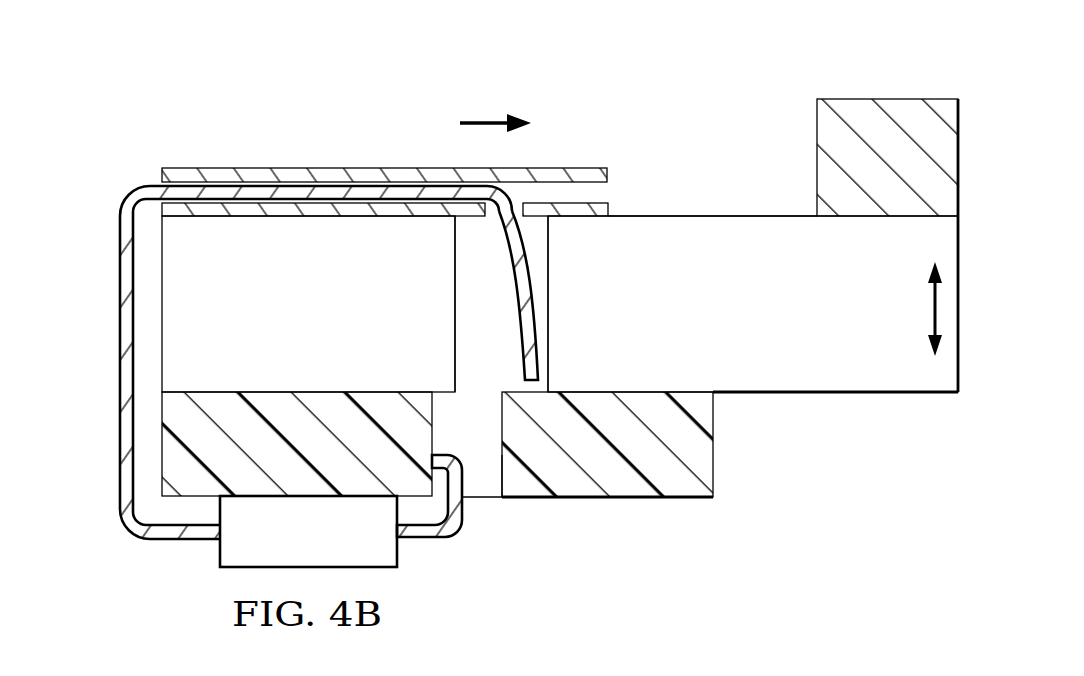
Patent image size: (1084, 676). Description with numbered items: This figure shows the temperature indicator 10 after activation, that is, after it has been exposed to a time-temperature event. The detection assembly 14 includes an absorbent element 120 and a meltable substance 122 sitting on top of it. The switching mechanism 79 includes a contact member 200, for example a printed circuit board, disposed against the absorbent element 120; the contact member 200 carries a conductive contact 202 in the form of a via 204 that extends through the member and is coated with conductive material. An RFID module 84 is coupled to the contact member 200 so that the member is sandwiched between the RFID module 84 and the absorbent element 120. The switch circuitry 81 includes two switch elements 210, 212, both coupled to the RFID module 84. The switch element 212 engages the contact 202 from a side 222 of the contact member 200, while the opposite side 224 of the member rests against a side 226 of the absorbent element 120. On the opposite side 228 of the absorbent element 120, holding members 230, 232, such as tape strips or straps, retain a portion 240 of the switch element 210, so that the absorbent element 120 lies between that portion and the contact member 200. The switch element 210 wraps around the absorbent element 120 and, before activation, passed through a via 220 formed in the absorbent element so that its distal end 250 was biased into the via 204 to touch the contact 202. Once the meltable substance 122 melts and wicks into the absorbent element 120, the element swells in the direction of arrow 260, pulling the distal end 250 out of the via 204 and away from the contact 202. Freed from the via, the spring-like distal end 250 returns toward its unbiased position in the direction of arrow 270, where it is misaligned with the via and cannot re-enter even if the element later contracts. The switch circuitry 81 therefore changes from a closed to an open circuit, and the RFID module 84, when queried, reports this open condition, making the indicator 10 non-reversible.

The temperature indicator 10 is at (378, 82).
The detection assembly 14 is at (738, 538).
The switching mechanism 79 is at (651, 501).
The switch circuitry 81 is at (138, 554).
The RFID module 84 is at (228, 553).
The absorbent element 120 is at (878, 385).
The meltable substance 122 is at (905, 100).
The contact member 200 is at (703, 460).
The conductive contact 202 is at (500, 482).
The via 204 is at (477, 498).
The switch element 210 is at (121, 242).
The switch element 212 is at (413, 538).
The via 220 is at (538, 270).
The side or surface 222 is at (576, 498).
The side or surface 224 is at (205, 373).
The side or surface 226 is at (812, 392).
The side or surface 228 is at (738, 216).
The holding member 230 is at (570, 173).
The holding member 232 is at (163, 210).
The portion of switch element 240 is at (318, 192).
The distal end 250 is at (515, 294).
The arrow 260 is at (928, 308).
The arrow 270 is at (487, 118).